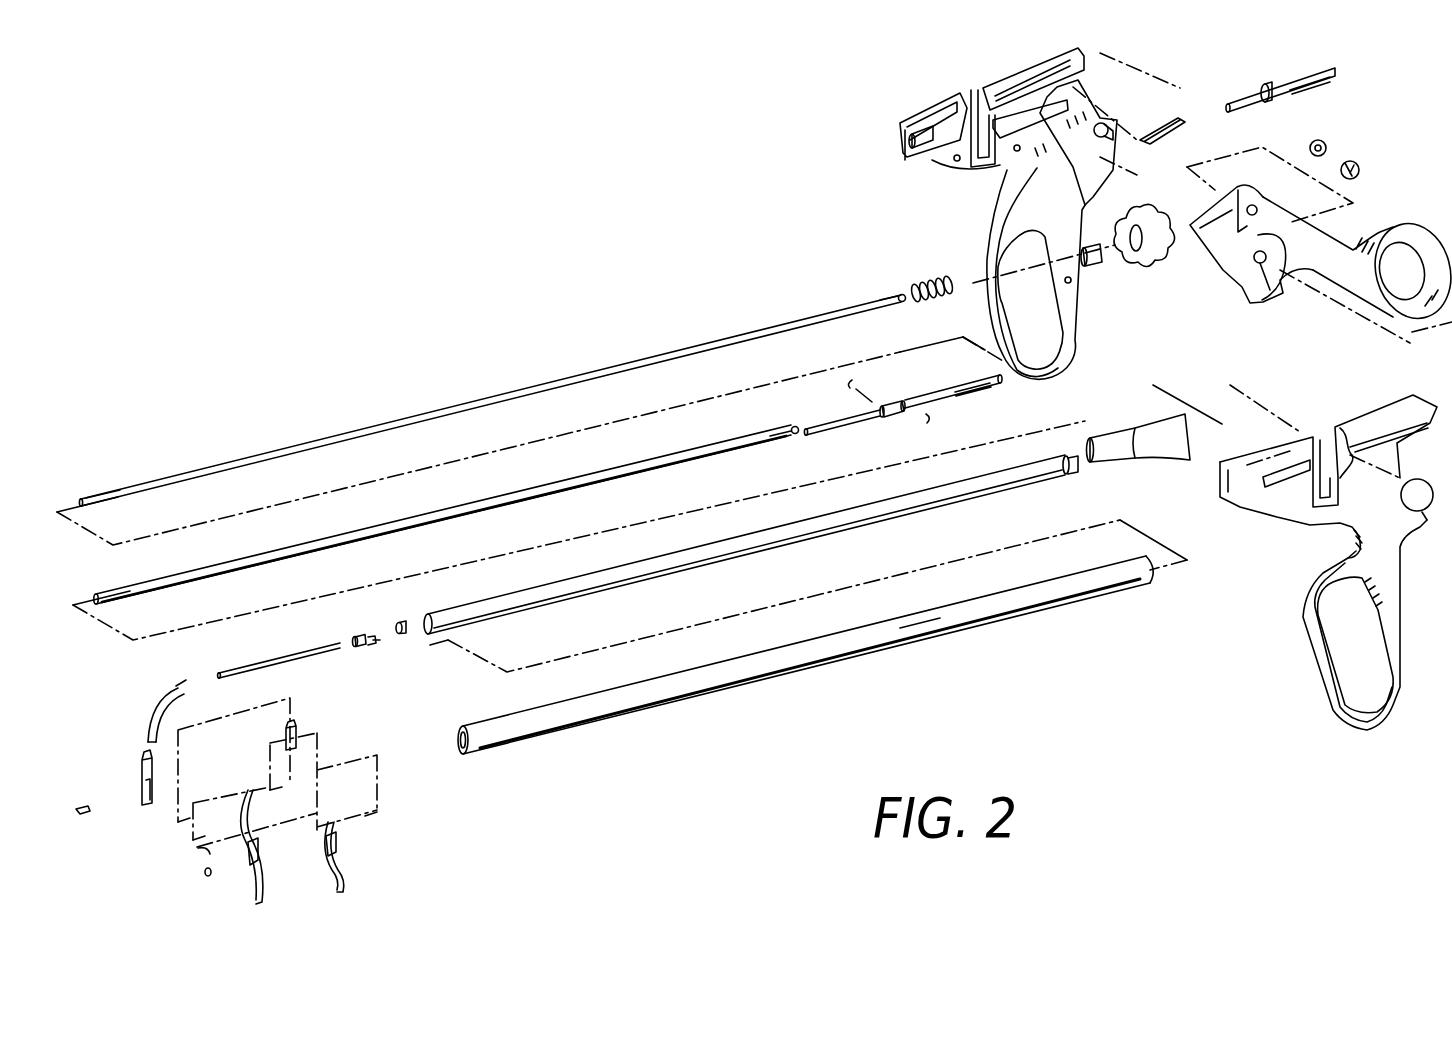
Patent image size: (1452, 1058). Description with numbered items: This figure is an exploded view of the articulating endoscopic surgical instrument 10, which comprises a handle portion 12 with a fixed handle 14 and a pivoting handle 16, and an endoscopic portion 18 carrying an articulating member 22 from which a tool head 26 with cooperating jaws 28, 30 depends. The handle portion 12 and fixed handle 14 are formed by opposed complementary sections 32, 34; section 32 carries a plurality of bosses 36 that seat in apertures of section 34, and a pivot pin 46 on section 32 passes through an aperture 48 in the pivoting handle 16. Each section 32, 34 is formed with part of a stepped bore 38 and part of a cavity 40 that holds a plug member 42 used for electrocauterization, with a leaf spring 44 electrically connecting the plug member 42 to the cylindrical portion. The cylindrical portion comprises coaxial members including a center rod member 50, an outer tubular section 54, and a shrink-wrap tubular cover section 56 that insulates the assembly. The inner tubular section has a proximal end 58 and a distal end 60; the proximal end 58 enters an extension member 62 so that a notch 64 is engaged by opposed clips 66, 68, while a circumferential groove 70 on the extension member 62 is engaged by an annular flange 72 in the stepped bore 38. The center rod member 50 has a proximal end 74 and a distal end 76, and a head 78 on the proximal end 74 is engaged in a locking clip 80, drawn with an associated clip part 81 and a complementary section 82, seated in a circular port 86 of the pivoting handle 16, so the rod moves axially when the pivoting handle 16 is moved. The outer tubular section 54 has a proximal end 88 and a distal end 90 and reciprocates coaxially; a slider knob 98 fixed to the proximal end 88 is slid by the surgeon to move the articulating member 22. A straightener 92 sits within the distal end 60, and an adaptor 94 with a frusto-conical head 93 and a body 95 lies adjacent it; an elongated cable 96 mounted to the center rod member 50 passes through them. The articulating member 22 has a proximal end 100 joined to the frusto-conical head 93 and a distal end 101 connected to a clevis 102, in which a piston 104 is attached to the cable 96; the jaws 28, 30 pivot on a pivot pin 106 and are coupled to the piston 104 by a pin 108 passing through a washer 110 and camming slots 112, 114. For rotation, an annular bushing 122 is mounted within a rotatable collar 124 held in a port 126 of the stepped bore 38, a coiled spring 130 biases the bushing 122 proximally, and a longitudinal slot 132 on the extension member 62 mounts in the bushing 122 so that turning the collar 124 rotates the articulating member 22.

The articulating endoscopic surgical instrument 10 is at (710, 240).
The handle portion 12 is at (924, 80).
The fixed handle 14 is at (1335, 715).
The pivoting handle 16 is at (1415, 236).
The endoscopic portion 18 is at (760, 702).
The articulating member 22 is at (150, 705).
The tool head 26 is at (338, 745).
The cooperating jaw 28 is at (256, 893).
The cooperating jaw 30 is at (340, 866).
The complementary section 32 is at (1062, 200).
The complementary section 34 is at (1345, 552).
The bosses 36 is at (1017, 152).
The stepped bore 38 is at (905, 150).
The cavity 40 is at (1070, 68).
The plug member 42 is at (1292, 86).
The leaf spring 44 is at (1180, 112).
The pivot pin 46 is at (1113, 125).
The aperture 48 is at (1268, 290).
The center rod member 50 is at (760, 330).
The outer tubular section 54 is at (910, 496).
The tubular cover section 56 is at (921, 626).
The proximal end 58 is at (790, 440).
The distal end 60 is at (100, 595).
The extension member 62 is at (851, 432).
The notch 64 is at (790, 426).
The clip 66 is at (845, 385).
The clip 68 is at (931, 419).
The circumferential groove 70 is at (902, 400).
The annular flange 72 is at (925, 150).
The proximal end 74 is at (897, 299).
The distal end 76 is at (83, 500).
The head 78 is at (902, 293).
The locking clip 80 is at (1345, 146).
The washer 81 is at (1318, 140).
The complementary section 82 is at (1361, 171).
The circular port 86 is at (1238, 255).
The proximal end 88 is at (1070, 474).
The distal end 90 is at (438, 614).
The straightener 92 is at (401, 622).
The frusto-conical head 93 is at (370, 650).
The adaptor 94 is at (346, 633).
The body 95 is at (357, 636).
The elongated cable 96 is at (251, 660).
The slider knob 98 is at (1156, 450).
The proximal end 100 is at (180, 682).
The distal end 101 is at (142, 738).
The clevis 102 is at (140, 775).
The piston 104 is at (294, 724).
The pivot pin 106 is at (86, 814).
The pin 108 is at (196, 851).
The washer 110 is at (205, 876).
The camming slot 112 is at (249, 788).
The camming slot 114 is at (332, 820).
The annular bushing 122 is at (1097, 264).
The rotatable collar 124 is at (1162, 248).
The port 126 is at (984, 86).
The coiled spring 130 is at (948, 278).
The longitudinal slot 132 is at (1001, 386).